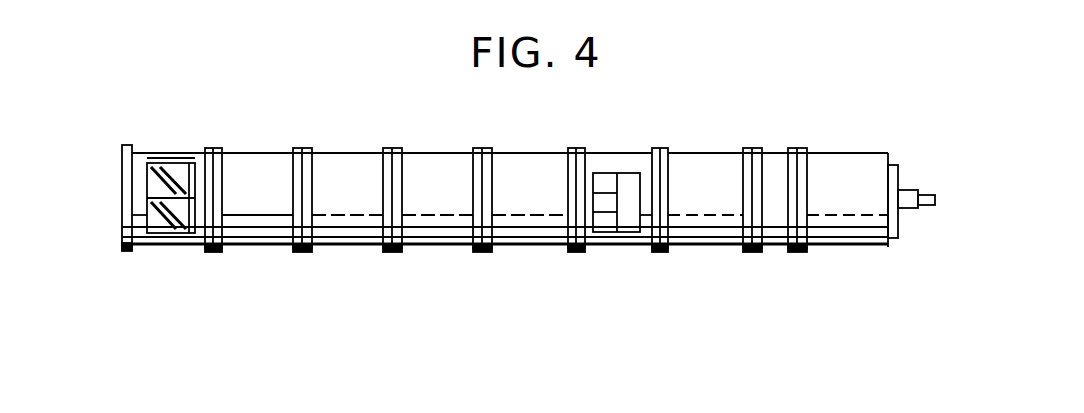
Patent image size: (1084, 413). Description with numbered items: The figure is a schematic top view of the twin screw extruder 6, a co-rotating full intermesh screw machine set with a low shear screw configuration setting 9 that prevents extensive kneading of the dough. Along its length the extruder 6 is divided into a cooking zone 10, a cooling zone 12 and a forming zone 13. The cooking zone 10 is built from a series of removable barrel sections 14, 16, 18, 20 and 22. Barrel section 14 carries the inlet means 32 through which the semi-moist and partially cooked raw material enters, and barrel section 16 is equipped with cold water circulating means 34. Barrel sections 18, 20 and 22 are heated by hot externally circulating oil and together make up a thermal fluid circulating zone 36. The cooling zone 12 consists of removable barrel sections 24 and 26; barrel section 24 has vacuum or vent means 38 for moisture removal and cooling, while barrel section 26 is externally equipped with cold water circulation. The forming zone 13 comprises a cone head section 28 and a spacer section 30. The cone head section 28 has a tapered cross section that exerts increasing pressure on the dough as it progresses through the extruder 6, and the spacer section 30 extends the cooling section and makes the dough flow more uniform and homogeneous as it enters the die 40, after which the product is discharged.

The twin screw extruder 6 is at (847, 155).
The low shear screw configuration setting 9 is at (149, 185).
The cooking zone 10 is at (123, 297).
The cooling zone 12 is at (743, 297).
The forming zone 13 is at (885, 300).
The barrel section 14 is at (170, 250).
The barrel section 16 is at (255, 250).
The barrel section 18 is at (345, 249).
The barrel section 20 is at (440, 250).
The barrel section 22 is at (531, 250).
The barrel section 24 is at (615, 250).
The barrel section 26 is at (702, 250).
The cone head section 28 is at (775, 250).
The spacer section 30 is at (833, 250).
The inlet means 32 is at (175, 151).
The cold water circulating means 34 is at (259, 150).
The thermal fluid circulating zone 36 is at (575, 141).
The vacuum or vent means 38 is at (629, 153).
The die 40 is at (913, 194).